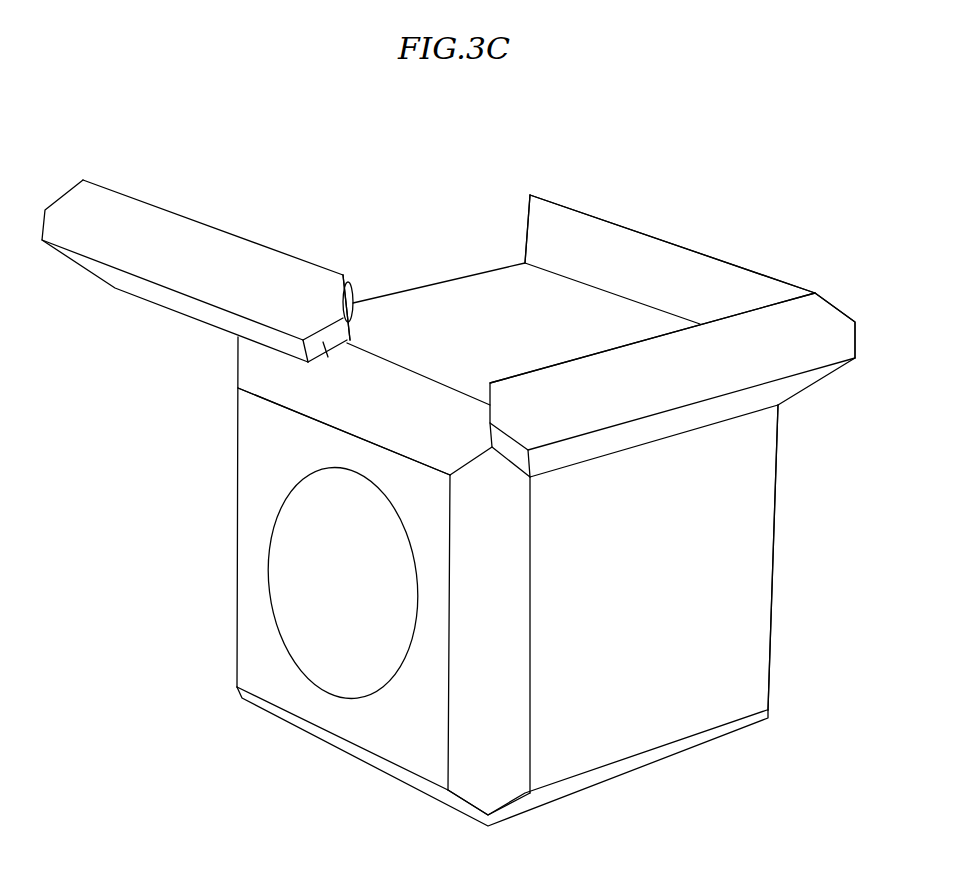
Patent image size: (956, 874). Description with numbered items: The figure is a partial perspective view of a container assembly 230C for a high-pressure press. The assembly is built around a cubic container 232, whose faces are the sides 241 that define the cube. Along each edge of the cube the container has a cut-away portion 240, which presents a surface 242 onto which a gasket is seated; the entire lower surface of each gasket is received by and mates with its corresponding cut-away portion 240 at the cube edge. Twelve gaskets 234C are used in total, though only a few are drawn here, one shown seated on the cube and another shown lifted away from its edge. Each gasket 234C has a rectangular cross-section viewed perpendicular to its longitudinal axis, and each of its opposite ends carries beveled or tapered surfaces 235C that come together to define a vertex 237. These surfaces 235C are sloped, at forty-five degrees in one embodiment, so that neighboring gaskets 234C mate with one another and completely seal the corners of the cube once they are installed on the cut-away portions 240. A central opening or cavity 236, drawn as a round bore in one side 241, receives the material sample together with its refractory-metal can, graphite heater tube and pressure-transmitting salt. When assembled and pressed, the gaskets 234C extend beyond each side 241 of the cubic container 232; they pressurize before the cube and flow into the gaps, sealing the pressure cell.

The container assembly 230C is at (357, 212).
The cubic container 232 is at (607, 720).
The gasket 234C is at (203, 265).
The beveled or tapered surface 235C is at (353, 297).
The central opening or cavity 236 is at (333, 585).
The vertex 237 is at (355, 320).
The cut-away portion 240 is at (470, 735).
The side 241 is at (490, 313).
The surface 242 is at (473, 595).